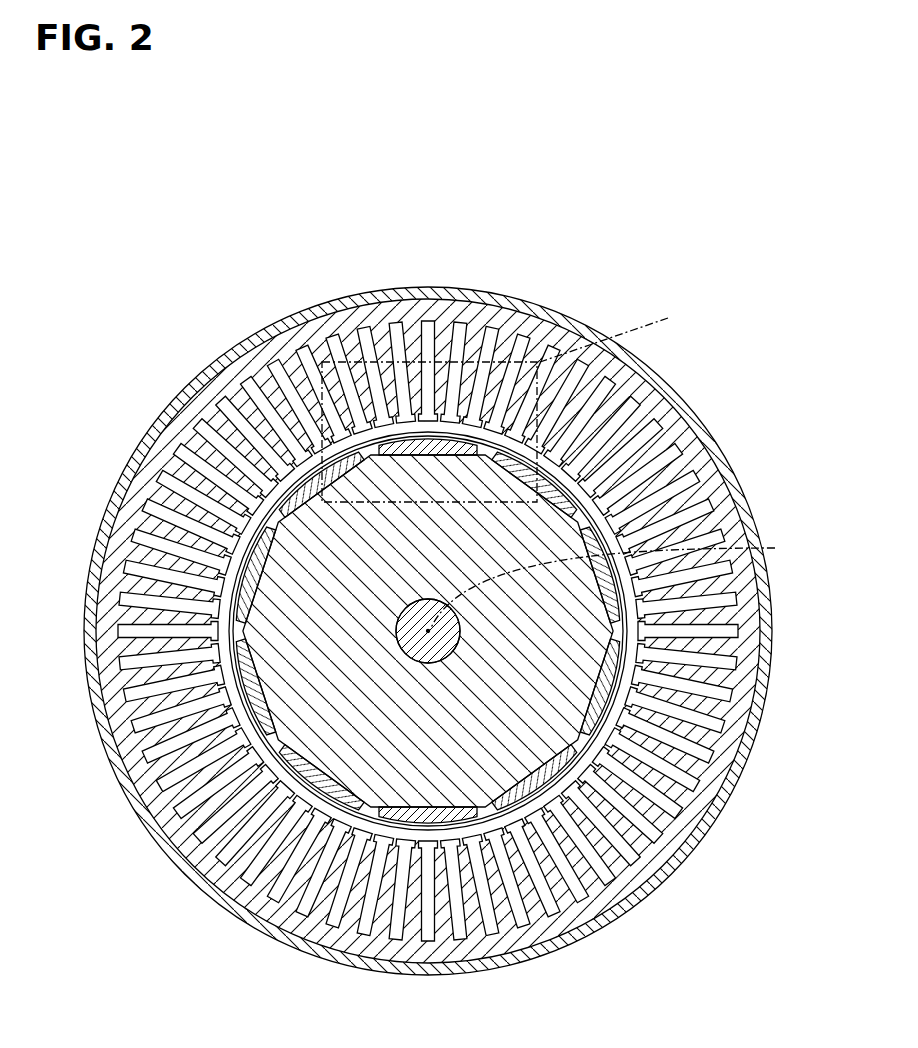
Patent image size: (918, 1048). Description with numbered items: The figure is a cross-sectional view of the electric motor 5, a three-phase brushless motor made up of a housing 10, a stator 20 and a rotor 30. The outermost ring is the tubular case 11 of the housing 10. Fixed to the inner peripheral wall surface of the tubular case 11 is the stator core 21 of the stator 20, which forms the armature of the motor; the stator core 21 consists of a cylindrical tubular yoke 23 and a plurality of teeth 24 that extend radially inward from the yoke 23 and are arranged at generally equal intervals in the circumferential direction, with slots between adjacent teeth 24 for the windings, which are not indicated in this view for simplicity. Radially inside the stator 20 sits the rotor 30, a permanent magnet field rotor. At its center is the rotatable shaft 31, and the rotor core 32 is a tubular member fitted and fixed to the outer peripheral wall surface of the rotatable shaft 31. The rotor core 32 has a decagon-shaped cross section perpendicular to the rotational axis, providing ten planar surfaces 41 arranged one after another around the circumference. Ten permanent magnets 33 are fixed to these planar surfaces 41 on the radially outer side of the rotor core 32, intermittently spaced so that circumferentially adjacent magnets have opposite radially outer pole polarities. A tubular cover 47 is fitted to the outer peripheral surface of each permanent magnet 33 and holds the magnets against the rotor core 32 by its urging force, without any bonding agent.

The electric motor 5 is at (226, 308).
The housing 10 is at (148, 835).
The tubular case 11 is at (190, 835).
The stator 20 is at (127, 498).
The stator core 21 is at (94, 368).
The yoke 23 is at (157, 453).
The teeth 24 is at (237, 455).
The rotor 30 is at (417, 420).
The rotatable shaft 31 is at (397, 634).
The rotor core 32 is at (383, 417).
The permanent magnets 33 is at (440, 420).
The planar surfaces 41 is at (470, 442).
The tubular cover 47 is at (492, 446).